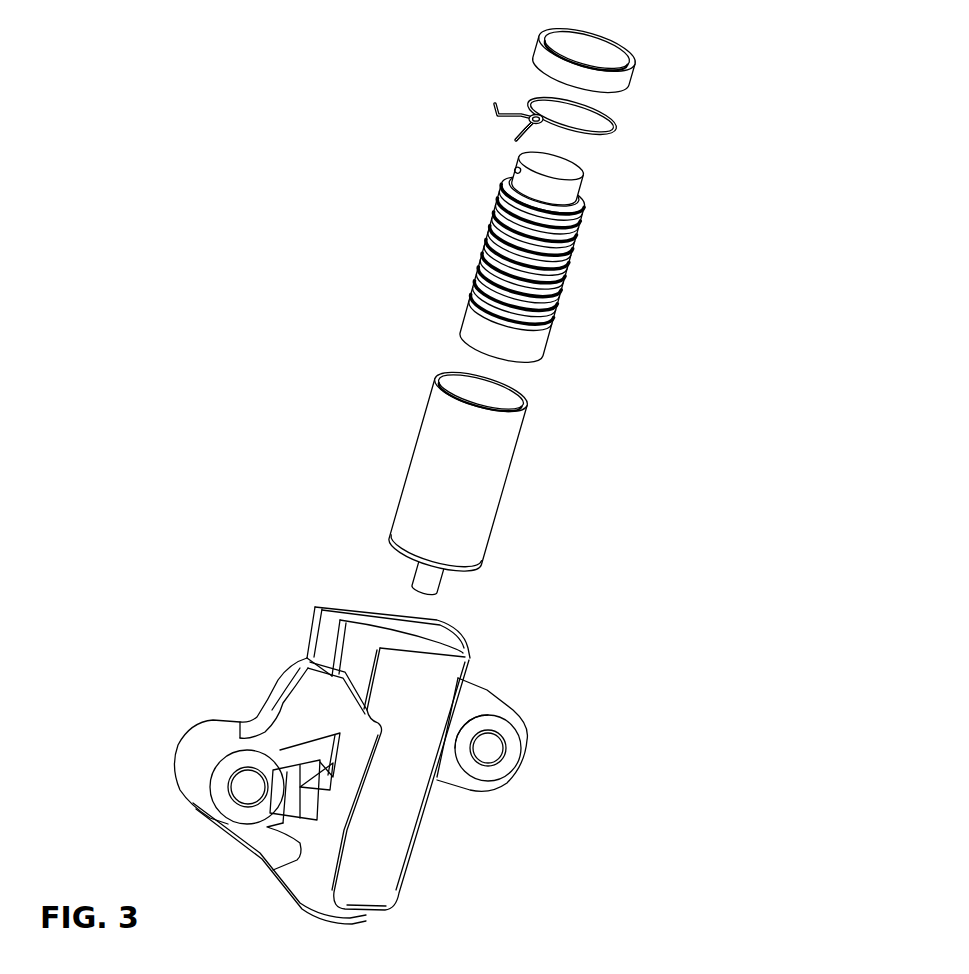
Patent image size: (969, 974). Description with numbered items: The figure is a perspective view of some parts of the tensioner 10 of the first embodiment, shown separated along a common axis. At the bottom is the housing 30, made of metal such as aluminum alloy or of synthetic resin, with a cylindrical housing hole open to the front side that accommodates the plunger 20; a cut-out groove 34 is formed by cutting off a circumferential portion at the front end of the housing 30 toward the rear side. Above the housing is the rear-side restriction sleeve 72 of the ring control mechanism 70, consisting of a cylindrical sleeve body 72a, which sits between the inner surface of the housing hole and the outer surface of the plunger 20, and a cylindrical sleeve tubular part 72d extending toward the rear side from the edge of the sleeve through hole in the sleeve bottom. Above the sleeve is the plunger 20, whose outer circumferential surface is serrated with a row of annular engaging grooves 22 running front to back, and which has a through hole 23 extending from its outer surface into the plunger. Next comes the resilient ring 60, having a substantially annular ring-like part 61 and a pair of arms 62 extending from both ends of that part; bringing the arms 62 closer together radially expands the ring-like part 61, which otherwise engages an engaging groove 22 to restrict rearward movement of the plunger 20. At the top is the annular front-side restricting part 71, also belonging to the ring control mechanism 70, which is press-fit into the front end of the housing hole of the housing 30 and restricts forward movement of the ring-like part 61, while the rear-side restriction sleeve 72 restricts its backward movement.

The tensioner 10 is at (327, 117).
The plunger 20 is at (553, 258).
The engaging groove 22 is at (481, 246).
The through hole 23 is at (518, 171).
The housing 30 is at (381, 752).
The cut-out groove 34 is at (347, 653).
The resilient ring 60 is at (580, 101).
The ring-like part 61 is at (533, 101).
The arms 62 is at (510, 135).
The ring control mechanism 70 is at (545, 308).
The front-side restricting part 71 is at (651, 63).
The rear-side restriction sleeve 72 is at (491, 480).
The sleeve body 72a is at (433, 445).
The sleeve tubular part 72d is at (421, 578).